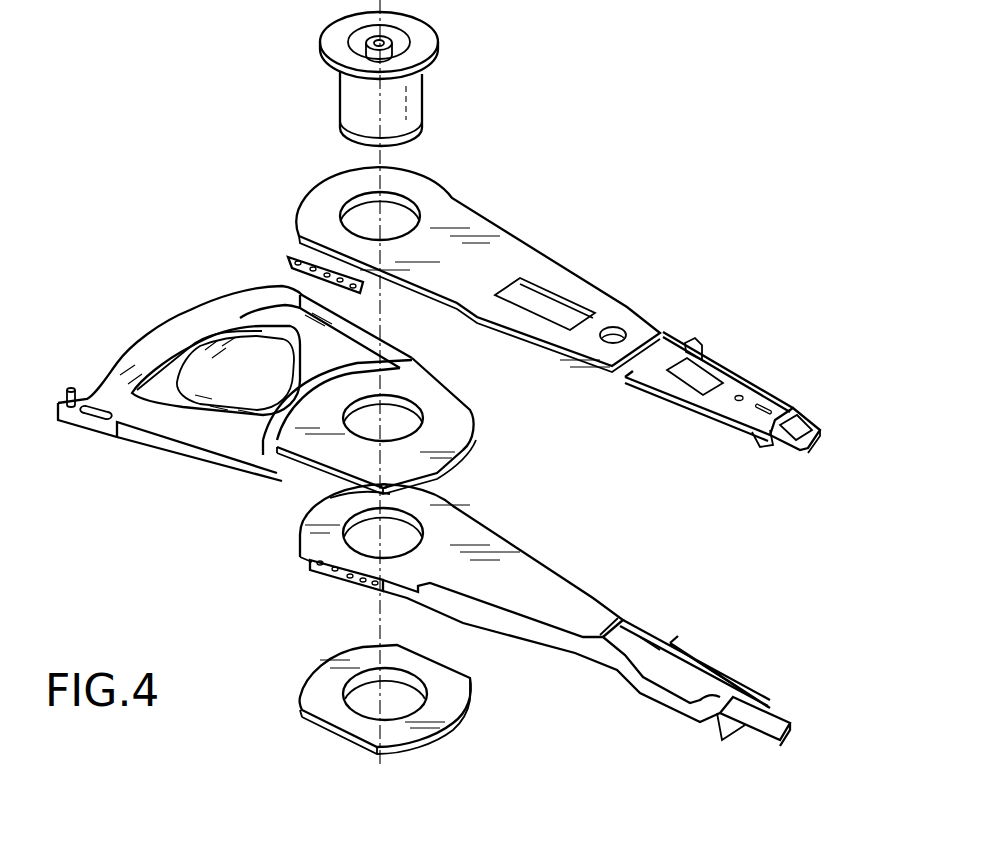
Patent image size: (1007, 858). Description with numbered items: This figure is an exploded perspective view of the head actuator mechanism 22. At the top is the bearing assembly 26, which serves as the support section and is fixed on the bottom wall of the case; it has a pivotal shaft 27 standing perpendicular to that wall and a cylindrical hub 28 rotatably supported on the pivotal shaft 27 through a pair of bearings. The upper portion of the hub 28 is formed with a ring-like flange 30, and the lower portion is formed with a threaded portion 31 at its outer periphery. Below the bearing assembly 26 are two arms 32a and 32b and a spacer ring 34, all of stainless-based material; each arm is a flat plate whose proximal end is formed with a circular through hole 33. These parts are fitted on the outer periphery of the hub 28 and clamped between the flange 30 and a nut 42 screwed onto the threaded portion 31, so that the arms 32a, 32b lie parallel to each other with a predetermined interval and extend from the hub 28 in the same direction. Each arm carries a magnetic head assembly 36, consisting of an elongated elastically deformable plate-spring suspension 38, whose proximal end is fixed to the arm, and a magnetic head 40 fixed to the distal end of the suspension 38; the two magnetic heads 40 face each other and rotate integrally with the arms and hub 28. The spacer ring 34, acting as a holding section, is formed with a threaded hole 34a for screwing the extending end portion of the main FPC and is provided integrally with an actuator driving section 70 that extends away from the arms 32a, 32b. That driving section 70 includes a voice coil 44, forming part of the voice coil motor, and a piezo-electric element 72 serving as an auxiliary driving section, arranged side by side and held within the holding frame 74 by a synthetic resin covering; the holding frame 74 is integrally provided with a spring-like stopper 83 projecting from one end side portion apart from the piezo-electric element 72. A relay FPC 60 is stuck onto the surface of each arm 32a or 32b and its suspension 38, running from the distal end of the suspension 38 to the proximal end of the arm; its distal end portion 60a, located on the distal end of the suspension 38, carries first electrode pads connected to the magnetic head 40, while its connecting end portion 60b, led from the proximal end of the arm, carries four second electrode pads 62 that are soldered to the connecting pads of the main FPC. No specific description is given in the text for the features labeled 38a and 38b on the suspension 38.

The head actuator mechanism 22 is at (505, 269).
The bearing assembly 26 is at (364, 77).
The pivotal shaft 27 is at (393, 42).
The cylindrical hub 28 is at (355, 106).
The ring-like flange 30 is at (415, 60).
The threaded portion 31 is at (415, 135).
The arm 32a is at (528, 270).
The arm 32b is at (484, 603).
The circular through hole 33 is at (357, 217).
The spacer ring 34 is at (447, 435).
The threaded hole 34a is at (340, 500).
The magnetic head assembly 36 is at (714, 519).
The suspension 38 is at (708, 471).
The bent edge of tongue 38a is at (755, 383).
The slot in tongue 38b is at (665, 375).
The magnetic head 40 is at (817, 423).
The nut 42 is at (323, 678).
The voice coil 44 is at (183, 352).
The relay flexible printed circuit board 60 is at (518, 607).
The distal end portion 60a is at (710, 677).
The connecting end portion 60b is at (298, 426).
The second electrode pads 62 is at (310, 277).
The actuator driving section 70 is at (243, 411).
The piezo-electric element 72 is at (362, 338).
The holding frame 74 is at (235, 385).
The stopper 83 is at (80, 425).